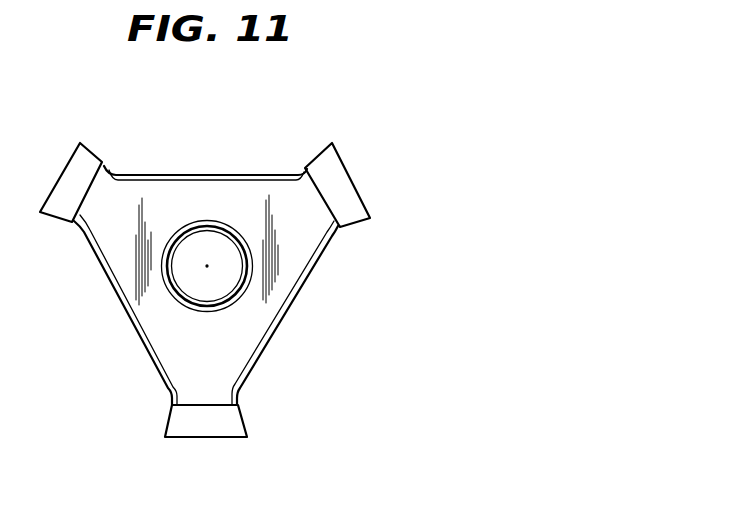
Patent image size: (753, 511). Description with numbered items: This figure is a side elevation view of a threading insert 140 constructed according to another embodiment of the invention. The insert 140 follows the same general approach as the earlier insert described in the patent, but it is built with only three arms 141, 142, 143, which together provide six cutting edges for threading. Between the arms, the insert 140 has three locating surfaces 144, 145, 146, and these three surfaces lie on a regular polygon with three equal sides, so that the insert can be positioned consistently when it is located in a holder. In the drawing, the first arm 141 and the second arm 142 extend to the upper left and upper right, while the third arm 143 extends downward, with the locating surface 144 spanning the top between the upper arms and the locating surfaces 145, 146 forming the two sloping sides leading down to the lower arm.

The insert 140 is at (232, 263).
The arm 141 is at (88, 148).
The arm 142 is at (365, 222).
The arm 143 is at (247, 428).
The locating surface 144 is at (249, 176).
The locating surface 145 is at (262, 338).
The locating surface 146 is at (137, 322).